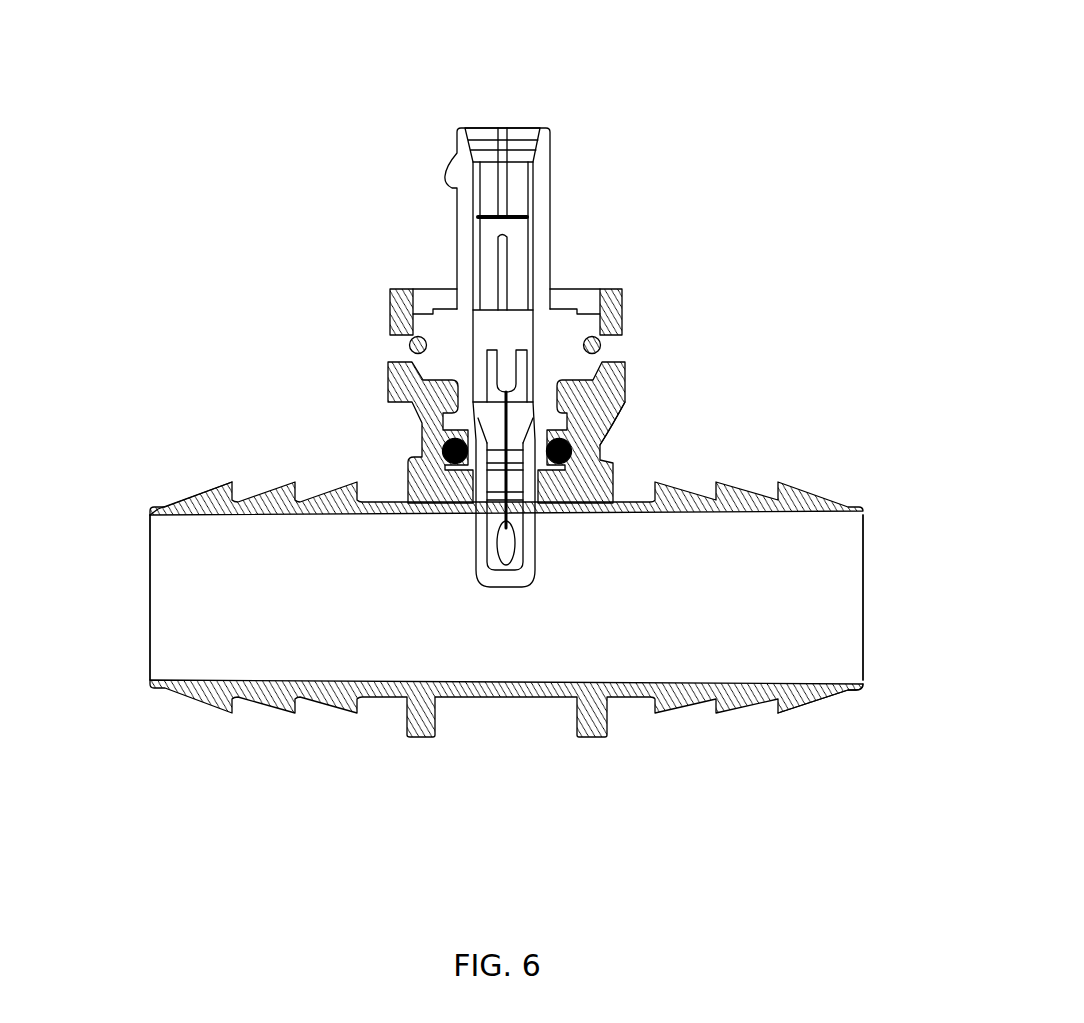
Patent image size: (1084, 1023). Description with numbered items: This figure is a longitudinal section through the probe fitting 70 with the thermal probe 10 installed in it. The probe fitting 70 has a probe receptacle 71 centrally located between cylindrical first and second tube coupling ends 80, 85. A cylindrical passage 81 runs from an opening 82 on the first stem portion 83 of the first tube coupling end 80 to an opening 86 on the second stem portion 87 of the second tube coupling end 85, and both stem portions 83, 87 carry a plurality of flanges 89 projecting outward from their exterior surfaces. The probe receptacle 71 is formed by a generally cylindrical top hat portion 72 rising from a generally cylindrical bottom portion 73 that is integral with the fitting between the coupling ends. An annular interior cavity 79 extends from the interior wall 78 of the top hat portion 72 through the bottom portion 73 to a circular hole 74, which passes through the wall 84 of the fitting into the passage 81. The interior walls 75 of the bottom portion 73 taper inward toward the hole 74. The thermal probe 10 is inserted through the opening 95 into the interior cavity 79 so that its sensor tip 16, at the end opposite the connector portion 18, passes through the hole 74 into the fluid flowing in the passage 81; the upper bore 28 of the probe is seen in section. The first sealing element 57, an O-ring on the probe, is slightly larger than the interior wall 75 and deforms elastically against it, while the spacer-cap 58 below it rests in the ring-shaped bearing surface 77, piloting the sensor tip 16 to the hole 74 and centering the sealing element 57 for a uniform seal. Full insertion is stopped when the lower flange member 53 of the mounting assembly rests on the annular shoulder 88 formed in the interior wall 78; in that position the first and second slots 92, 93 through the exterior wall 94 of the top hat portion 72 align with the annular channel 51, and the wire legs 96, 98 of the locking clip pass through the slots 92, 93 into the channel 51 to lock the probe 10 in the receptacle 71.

The thermal probe 10 is at (612, 77).
The sensor tip 16 is at (533, 568).
The connector portion 18 is at (447, 176).
The bore 28 is at (488, 128).
The annular channel 51 is at (449, 302).
The lower flange member 53 is at (610, 358).
The first sealing element 57 is at (570, 453).
The spacer-cap 58 is at (440, 492).
The probe fitting 70 is at (252, 247).
The probe receptacle 71 is at (610, 427).
The top hat portion 72 is at (615, 297).
The bottom portion 73 is at (606, 446).
The circular hole 74 is at (472, 520).
The interior wall 75 is at (440, 430).
The bearing surface 77 is at (565, 495).
The interior wall 78 is at (438, 318).
The interior cavity 79 is at (585, 303).
The first tube coupling end 80 is at (213, 741).
The cylindrical passage 81 is at (190, 575).
The opening 82 is at (148, 626).
The first stem portion 83 is at (162, 507).
The wall 84 is at (556, 520).
The second tube coupling end 85 is at (795, 740).
The opening 86 is at (866, 577).
The second stem portion 87 is at (840, 690).
The annular shoulder 88 is at (605, 387).
The flanges 89 is at (355, 480).
The first slot 92 is at (411, 350).
The second slot 93 is at (602, 347).
The exterior wall 94 is at (400, 366).
The opening 95 is at (566, 290).
The leg 96 is at (403, 346).
The leg 98 is at (601, 349).